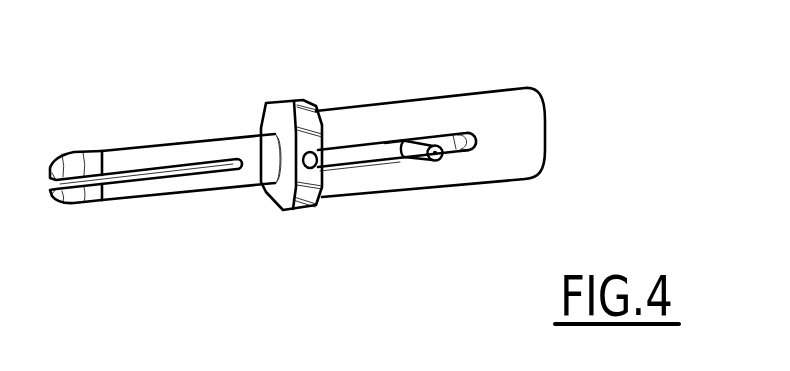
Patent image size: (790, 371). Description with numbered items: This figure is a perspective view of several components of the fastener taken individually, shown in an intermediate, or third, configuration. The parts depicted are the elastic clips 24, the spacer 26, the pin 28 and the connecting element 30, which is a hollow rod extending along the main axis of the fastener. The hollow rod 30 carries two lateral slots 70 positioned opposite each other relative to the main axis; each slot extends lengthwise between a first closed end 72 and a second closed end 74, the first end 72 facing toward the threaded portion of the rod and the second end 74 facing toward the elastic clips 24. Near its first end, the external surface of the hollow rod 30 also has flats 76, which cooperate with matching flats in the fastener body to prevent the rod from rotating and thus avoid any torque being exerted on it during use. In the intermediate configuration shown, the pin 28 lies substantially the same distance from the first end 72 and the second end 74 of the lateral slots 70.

The elastic clips 24 is at (163, 194).
The spacer 26 is at (367, 150).
The pin 28 is at (410, 157).
The connecting element 30 is at (492, 117).
The lateral slots 70 is at (397, 127).
The first closed end 72 is at (329, 154).
The second closed end 74 is at (455, 163).
The flats 76 is at (274, 211).